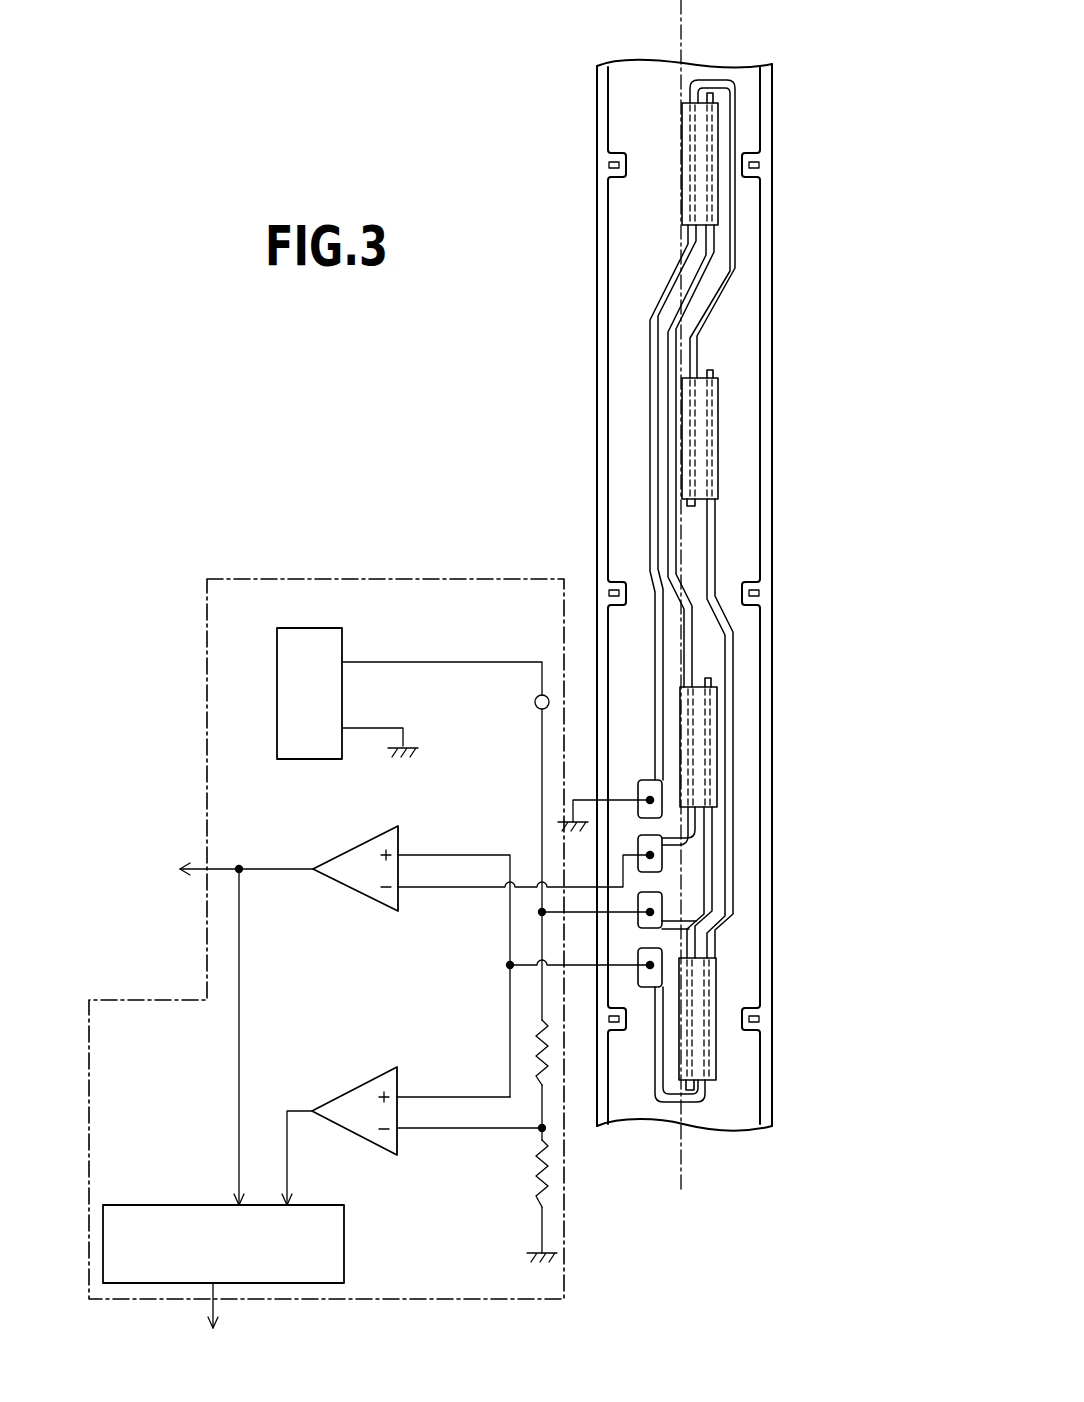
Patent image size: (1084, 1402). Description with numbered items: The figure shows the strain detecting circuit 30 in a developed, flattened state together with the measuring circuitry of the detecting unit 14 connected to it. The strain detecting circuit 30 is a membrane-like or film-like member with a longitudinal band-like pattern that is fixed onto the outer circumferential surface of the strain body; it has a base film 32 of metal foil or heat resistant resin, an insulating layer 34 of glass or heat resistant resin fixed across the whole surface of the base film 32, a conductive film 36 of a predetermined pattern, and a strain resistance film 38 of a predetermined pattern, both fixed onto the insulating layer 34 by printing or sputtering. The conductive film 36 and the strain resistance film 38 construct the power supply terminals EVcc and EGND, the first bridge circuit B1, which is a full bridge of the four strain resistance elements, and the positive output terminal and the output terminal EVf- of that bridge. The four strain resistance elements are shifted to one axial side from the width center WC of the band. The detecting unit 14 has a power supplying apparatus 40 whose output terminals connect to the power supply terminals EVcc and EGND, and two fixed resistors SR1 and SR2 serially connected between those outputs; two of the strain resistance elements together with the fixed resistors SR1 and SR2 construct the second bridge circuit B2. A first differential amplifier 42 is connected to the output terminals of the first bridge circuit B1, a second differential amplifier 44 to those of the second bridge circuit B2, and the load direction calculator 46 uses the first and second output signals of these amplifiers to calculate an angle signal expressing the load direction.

The detecting unit 14 is at (396, 580).
The strain detecting circuit 30 is at (739, 595).
The base film 32 is at (762, 582).
The insulating layer 34 is at (743, 556).
The conductive film 36 is at (707, 320).
The strain resistance film 38 is at (700, 192).
The power supplying apparatus 40 is at (290, 650).
The first differential amplifier 42 is at (357, 852).
The second differential amplifier 44 is at (362, 1092).
The load direction calculator 46 is at (344, 1243).
The first bridge circuit B1 is at (818, 529).
The second bridge circuit B2 is at (512, 1212).
The fixed resistor SR1 is at (528, 1031).
The fixed resistor SR2 is at (530, 1177).
The width center WC is at (681, 1163).
The power supply terminal EGND is at (655, 810).
The output terminal EVf- is at (655, 865).
The power supply terminal EVcc is at (655, 900).